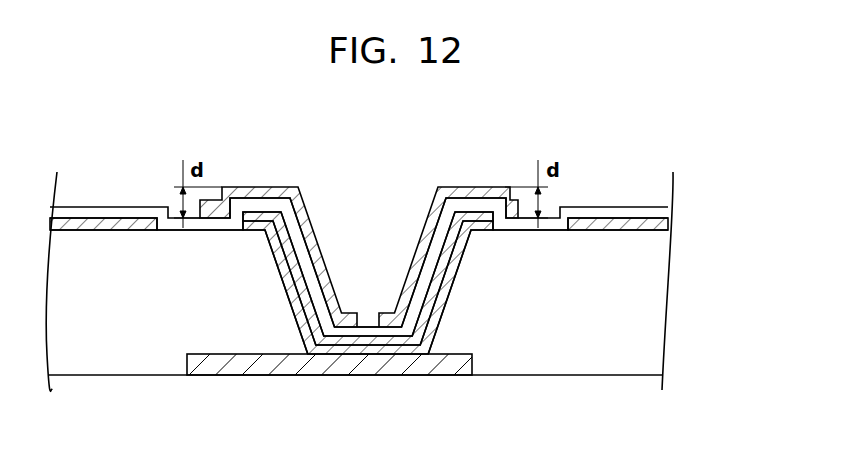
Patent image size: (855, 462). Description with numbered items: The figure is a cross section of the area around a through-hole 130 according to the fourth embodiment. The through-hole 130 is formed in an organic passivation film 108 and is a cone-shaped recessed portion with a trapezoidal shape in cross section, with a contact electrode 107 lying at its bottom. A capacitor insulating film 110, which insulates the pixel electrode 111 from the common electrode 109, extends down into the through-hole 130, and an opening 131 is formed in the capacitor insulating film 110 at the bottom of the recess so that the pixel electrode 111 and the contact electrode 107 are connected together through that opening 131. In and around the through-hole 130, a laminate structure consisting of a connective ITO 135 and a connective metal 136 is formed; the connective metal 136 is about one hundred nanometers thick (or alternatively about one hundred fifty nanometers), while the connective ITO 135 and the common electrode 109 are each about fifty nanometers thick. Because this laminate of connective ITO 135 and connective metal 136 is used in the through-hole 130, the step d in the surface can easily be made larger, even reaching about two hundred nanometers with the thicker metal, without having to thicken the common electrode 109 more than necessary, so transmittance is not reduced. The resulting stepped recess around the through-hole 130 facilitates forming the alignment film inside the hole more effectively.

The contact electrode 107 is at (323, 363).
The organic passivation film 108 is at (657, 301).
The common electrode 109 is at (130, 223).
The capacitor insulating film 110 is at (82, 207).
The pixel electrode 111 is at (627, 196).
The through-hole 130 is at (373, 249).
The opening 131 is at (403, 319).
The connective ITO 135 is at (447, 303).
The connective metal 136 is at (460, 261).